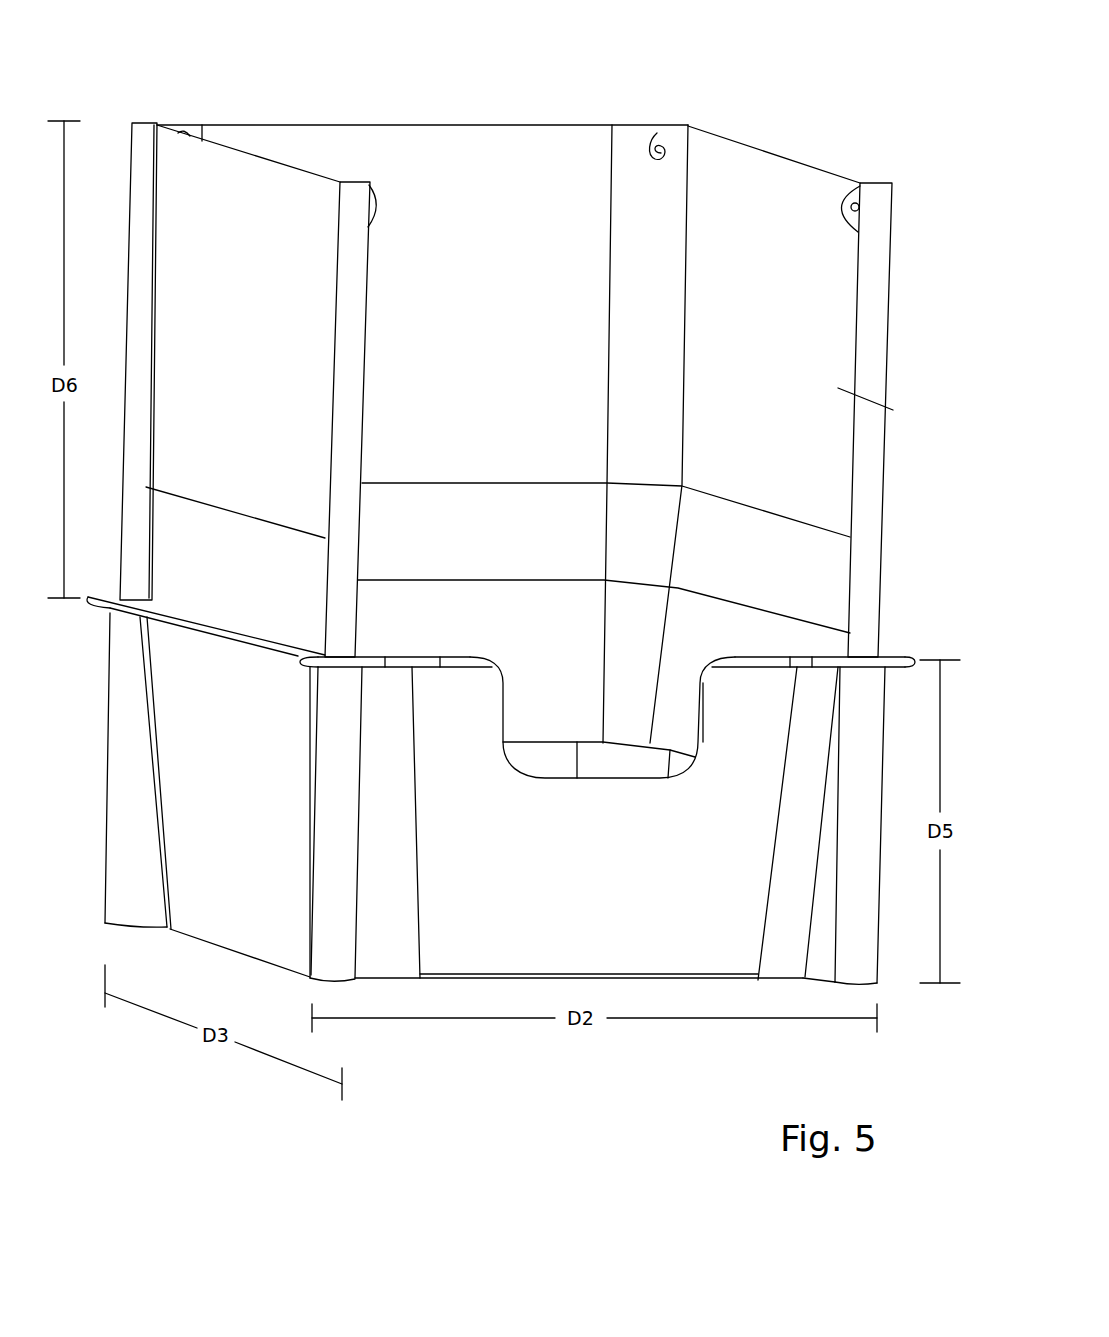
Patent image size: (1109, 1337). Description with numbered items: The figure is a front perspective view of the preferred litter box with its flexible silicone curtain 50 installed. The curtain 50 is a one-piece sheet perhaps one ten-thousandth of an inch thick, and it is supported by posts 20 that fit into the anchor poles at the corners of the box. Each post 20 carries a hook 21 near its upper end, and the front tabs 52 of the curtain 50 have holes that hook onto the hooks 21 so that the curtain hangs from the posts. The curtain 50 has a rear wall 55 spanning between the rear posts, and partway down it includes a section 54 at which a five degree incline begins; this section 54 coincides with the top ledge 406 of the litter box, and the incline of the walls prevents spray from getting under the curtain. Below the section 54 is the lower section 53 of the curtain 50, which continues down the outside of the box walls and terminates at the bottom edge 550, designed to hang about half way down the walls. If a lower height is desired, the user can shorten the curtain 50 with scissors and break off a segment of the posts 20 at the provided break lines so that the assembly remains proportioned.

The post 20 is at (668, 125).
The hook 21 is at (650, 140).
The curtain 50 is at (183, 325).
The front tab 52 is at (852, 188).
The lower section 53 is at (810, 647).
The section 54 is at (827, 528).
The rear wall 55 is at (486, 338).
The top ledge 406 is at (135, 607).
The bottom edge 550 is at (560, 742).